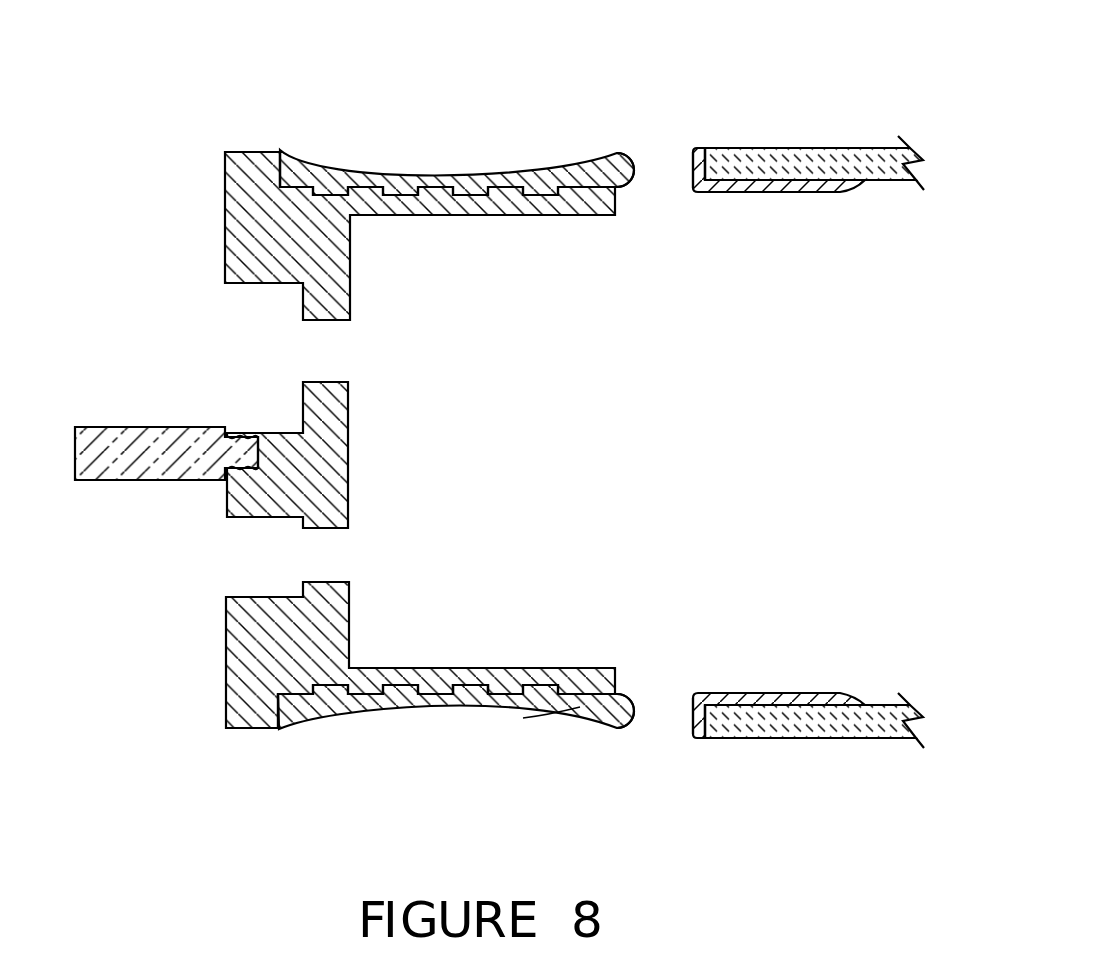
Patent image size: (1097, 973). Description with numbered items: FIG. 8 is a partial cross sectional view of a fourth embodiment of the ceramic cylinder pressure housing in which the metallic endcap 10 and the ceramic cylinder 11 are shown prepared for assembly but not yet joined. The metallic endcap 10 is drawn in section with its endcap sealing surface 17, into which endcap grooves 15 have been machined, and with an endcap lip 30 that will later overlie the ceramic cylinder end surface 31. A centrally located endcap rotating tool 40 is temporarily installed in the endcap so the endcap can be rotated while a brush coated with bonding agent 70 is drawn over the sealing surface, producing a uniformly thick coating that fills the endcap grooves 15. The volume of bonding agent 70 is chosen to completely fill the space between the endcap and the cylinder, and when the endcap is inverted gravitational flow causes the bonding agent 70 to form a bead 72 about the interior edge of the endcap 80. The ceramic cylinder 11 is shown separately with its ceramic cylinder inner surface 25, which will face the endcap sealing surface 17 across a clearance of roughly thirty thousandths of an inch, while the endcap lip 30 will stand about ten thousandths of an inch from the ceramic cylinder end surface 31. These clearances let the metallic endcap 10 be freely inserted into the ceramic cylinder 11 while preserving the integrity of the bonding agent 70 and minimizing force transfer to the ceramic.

The metallic endcap 10 is at (208, 213).
The ceramic cylinder 11 is at (723, 405).
The endcap grooves 15 is at (477, 195).
The endcap sealing surface 17 is at (500, 700).
The ceramic cylinder inner surface 25 is at (888, 182).
The endcap lip 30 is at (280, 162).
The ceramic cylinder end surface 31 is at (713, 163).
The endcap rotating tool 40 is at (103, 497).
The bonding agent 70 is at (770, 194).
The bead 72 is at (627, 152).
The interior edge of the endcap 80 is at (615, 676).